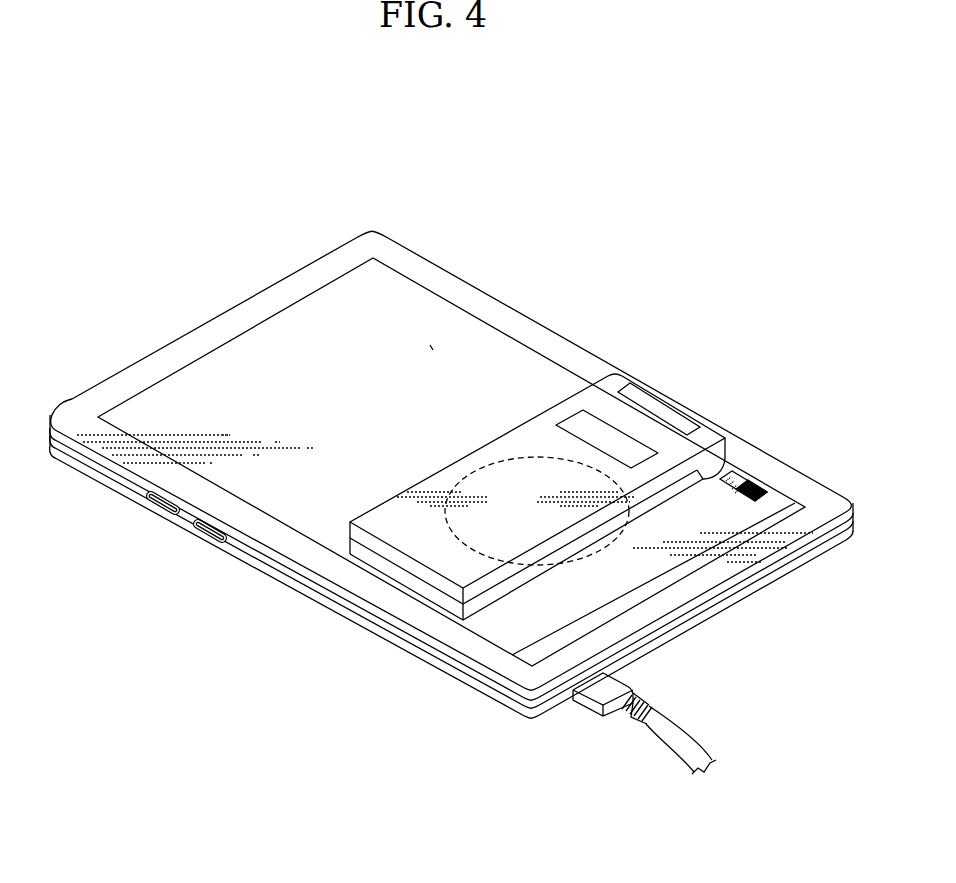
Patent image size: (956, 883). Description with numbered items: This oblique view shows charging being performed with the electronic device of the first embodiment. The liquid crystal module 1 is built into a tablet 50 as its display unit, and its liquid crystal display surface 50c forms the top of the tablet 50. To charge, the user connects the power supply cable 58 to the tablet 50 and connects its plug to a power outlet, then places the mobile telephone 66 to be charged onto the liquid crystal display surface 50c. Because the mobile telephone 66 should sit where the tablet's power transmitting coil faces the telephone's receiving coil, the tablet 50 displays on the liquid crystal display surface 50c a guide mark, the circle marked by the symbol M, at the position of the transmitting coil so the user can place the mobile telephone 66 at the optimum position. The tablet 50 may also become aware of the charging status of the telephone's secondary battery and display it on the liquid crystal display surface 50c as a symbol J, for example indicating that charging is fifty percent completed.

The tablet 50 is at (407, 196).
The liquid crystal display surface 50c is at (254, 360).
The liquid crystal module 1 is at (433, 352).
The mobile telephone 66 is at (538, 430).
The symbol (placement guide mark) M is at (598, 550).
The symbol (charging status indication) J is at (755, 484).
The power supply cable 58 is at (668, 735).